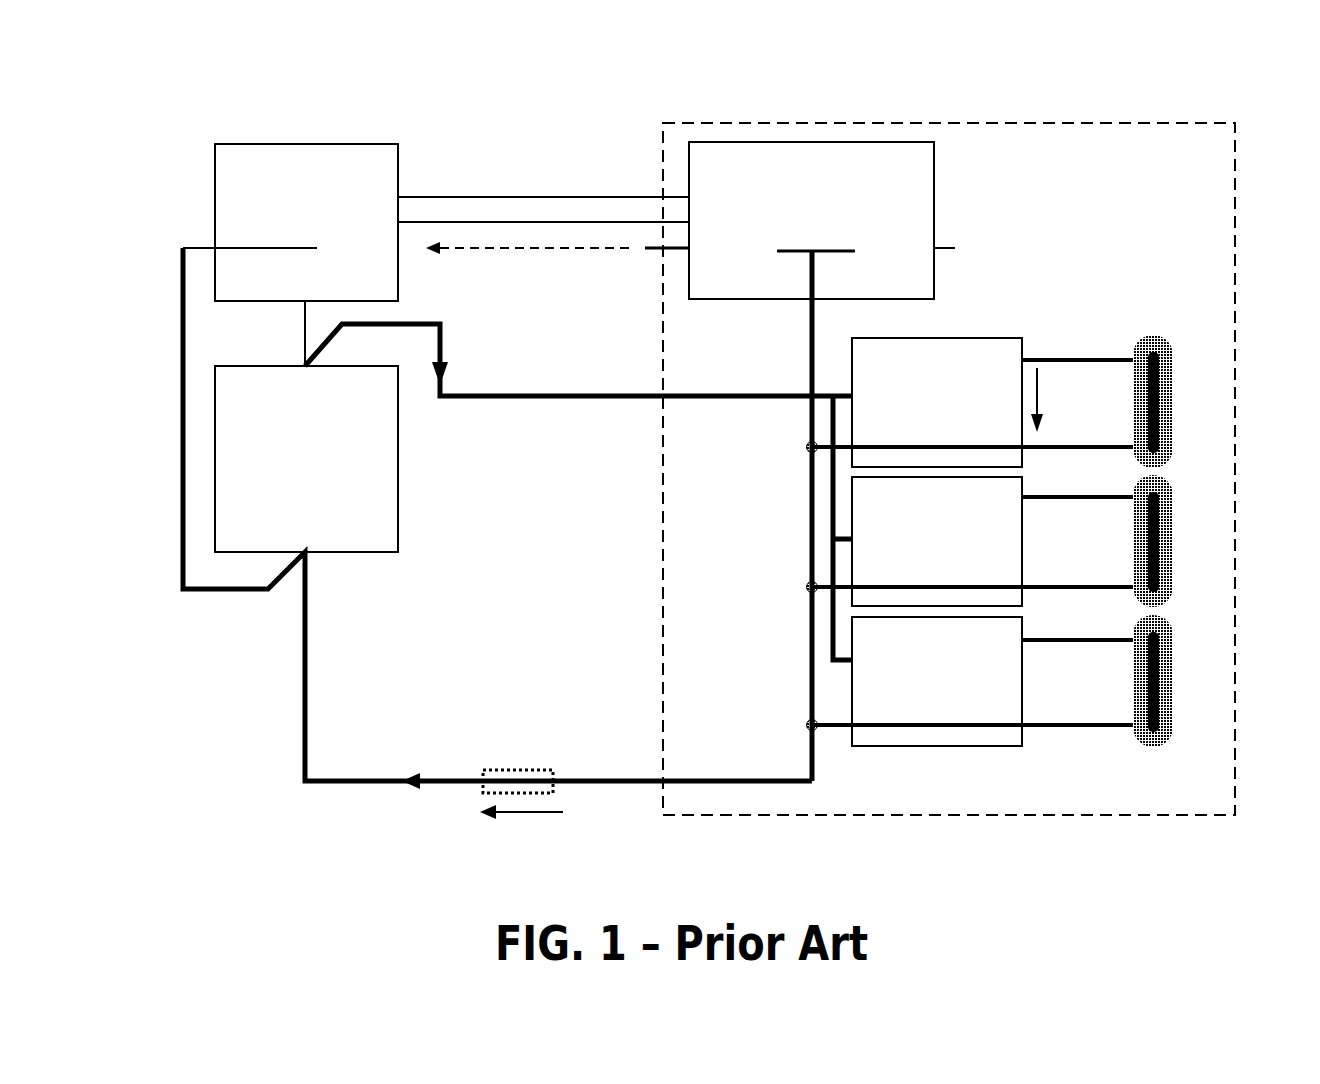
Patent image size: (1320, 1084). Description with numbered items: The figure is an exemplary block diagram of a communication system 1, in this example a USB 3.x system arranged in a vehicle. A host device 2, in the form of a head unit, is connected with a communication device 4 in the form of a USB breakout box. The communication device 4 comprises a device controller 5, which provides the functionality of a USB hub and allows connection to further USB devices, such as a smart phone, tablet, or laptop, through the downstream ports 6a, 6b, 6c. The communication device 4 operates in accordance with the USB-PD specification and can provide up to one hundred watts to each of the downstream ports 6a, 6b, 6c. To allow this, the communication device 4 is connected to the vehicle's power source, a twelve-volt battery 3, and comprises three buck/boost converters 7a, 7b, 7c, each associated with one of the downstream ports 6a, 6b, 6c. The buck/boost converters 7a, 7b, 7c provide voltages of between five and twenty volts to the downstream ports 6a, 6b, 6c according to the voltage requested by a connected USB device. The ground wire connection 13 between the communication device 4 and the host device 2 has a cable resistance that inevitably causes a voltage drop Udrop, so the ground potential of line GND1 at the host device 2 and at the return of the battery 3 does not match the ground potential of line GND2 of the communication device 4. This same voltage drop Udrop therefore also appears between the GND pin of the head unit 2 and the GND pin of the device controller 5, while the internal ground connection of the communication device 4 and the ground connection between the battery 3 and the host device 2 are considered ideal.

The communication system 1 is at (270, 113).
The host device 2 is at (227, 181).
The 12V battery 3 is at (370, 475).
The communication device 4 is at (1213, 148).
The device controller 5 is at (925, 167).
The downstream port 6a is at (1173, 404).
The downstream port 6b is at (1173, 545).
The downstream port 6c is at (1173, 700).
The buck/boost converter 7a is at (1000, 356).
The buck/boost converter 7b is at (1003, 569).
The buck/boost converter 7c is at (1003, 709).
The ground wire connection 13 is at (508, 778).